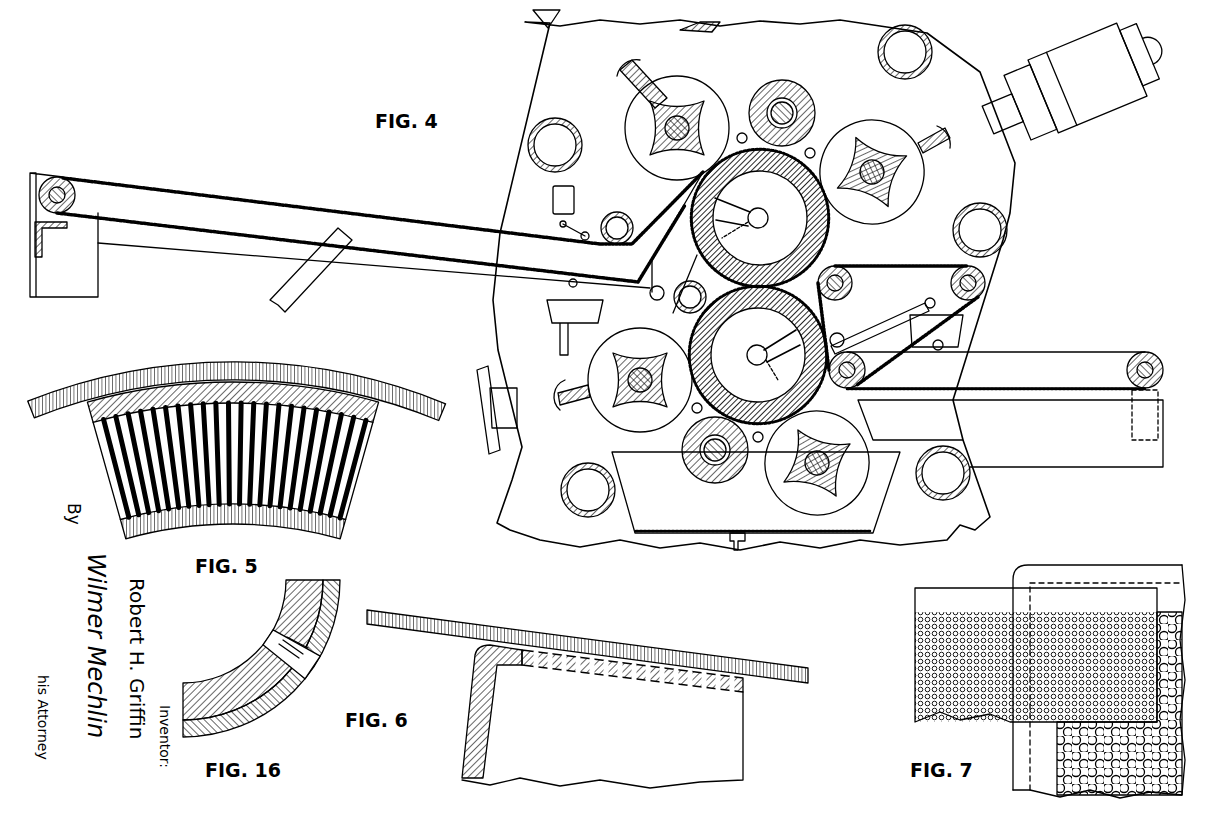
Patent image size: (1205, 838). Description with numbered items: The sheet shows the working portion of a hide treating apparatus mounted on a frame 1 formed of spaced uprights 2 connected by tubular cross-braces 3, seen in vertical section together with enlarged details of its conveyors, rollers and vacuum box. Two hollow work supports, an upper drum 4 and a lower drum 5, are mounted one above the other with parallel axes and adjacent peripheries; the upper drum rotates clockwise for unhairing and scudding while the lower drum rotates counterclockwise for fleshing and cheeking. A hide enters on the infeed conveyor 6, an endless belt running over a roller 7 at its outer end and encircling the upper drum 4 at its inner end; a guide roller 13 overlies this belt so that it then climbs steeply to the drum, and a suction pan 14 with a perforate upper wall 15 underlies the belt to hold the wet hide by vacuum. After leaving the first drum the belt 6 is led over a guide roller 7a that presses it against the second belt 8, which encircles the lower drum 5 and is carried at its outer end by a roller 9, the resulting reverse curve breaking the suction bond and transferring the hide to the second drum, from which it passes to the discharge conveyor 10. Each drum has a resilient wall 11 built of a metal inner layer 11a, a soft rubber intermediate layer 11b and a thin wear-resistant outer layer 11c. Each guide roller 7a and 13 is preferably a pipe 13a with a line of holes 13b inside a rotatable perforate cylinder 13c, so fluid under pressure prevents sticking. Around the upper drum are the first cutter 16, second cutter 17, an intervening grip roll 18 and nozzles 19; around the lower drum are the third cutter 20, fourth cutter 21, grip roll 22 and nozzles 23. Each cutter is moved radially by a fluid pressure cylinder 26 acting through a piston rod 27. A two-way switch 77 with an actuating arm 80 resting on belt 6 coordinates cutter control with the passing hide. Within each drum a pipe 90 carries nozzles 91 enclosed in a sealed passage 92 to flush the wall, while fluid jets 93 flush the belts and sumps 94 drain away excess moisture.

In FIG. 4, the frame 1 is at (524, 152).
In FIG. 4, the uprights 2 is at (1012, 190).
In FIG. 4, the cross-braces 3 is at (560, 121).
In FIG. 4, the upper drum 4 is at (698, 240).
In FIG. 4, the lower drum 5 is at (830, 333).
In FIG. 4, the infeed conveyor 6 is at (270, 200).
In FIG. 5, the infeed conveyor 6 is at (204, 362).
In FIG. 6, the infeed conveyor 6 is at (713, 654).
In FIG. 7, the infeed conveyor 6 is at (915, 645).
In FIG. 4, the roller 7 is at (76, 195).
In FIG. 4, the guide roller 7a is at (660, 318).
In FIG. 4, the belt 8 is at (912, 265).
In FIG. 4, the roller 9 is at (952, 283).
In FIG. 4, the discharge conveyor 10 is at (1063, 352).
In FIG. 4, the work-supporting walls 11 is at (768, 210).
In FIG. 5, the work-supporting walls 11 is at (244, 465).
In FIG. 5, the inner layer 11a is at (342, 528).
In FIG. 5, the intermediate layer 11b is at (365, 470).
In FIG. 5, the outside layer 11c is at (380, 418).
In FIG. 4, the guide roller 13 is at (628, 215).
In FIG. 16, the pipe 13a is at (286, 612).
In FIG. 16, the holes 13b is at (272, 640).
In FIG. 16, the perforate cylinder 13c is at (326, 652).
In FIG. 4, the suction pan 14 is at (340, 230).
In FIG. 6, the suction pan 14 is at (470, 688).
In FIG. 7, the suction pan 14 is at (1097, 565).
In FIG. 6, the perforate upper wall 15 is at (628, 684).
In FIG. 4, the first cutter 16 is at (698, 80).
In FIG. 4, the second cutter 17 is at (874, 120).
In FIG. 4, the grip roll 18 is at (800, 93).
In FIG. 4, the nozzles 19 is at (741, 132).
In FIG. 4, the third cutter 20 is at (615, 420).
In FIG. 4, the fourth cutter 21 is at (780, 488).
In FIG. 4, the grip roll 22 is at (698, 480).
In FIG. 4, the nozzles 23 is at (694, 414).
In FIG. 4, the fluid pressure cylinder 26 is at (540, 30).
In FIG. 4, the piston rod 27 is at (645, 70).
In FIG. 4, the two-way switch 77 is at (575, 193).
In FIG. 4, the actuating arm 80 is at (583, 232).
In FIG. 4, the pipe 90 is at (769, 220).
In FIG. 4, the nozzles 91 is at (742, 207).
In FIG. 4, the sealed passage 92 is at (752, 228).
In FIG. 4, the fluid jets 93 is at (576, 280).
In FIG. 4, the sumps 94 is at (547, 307).